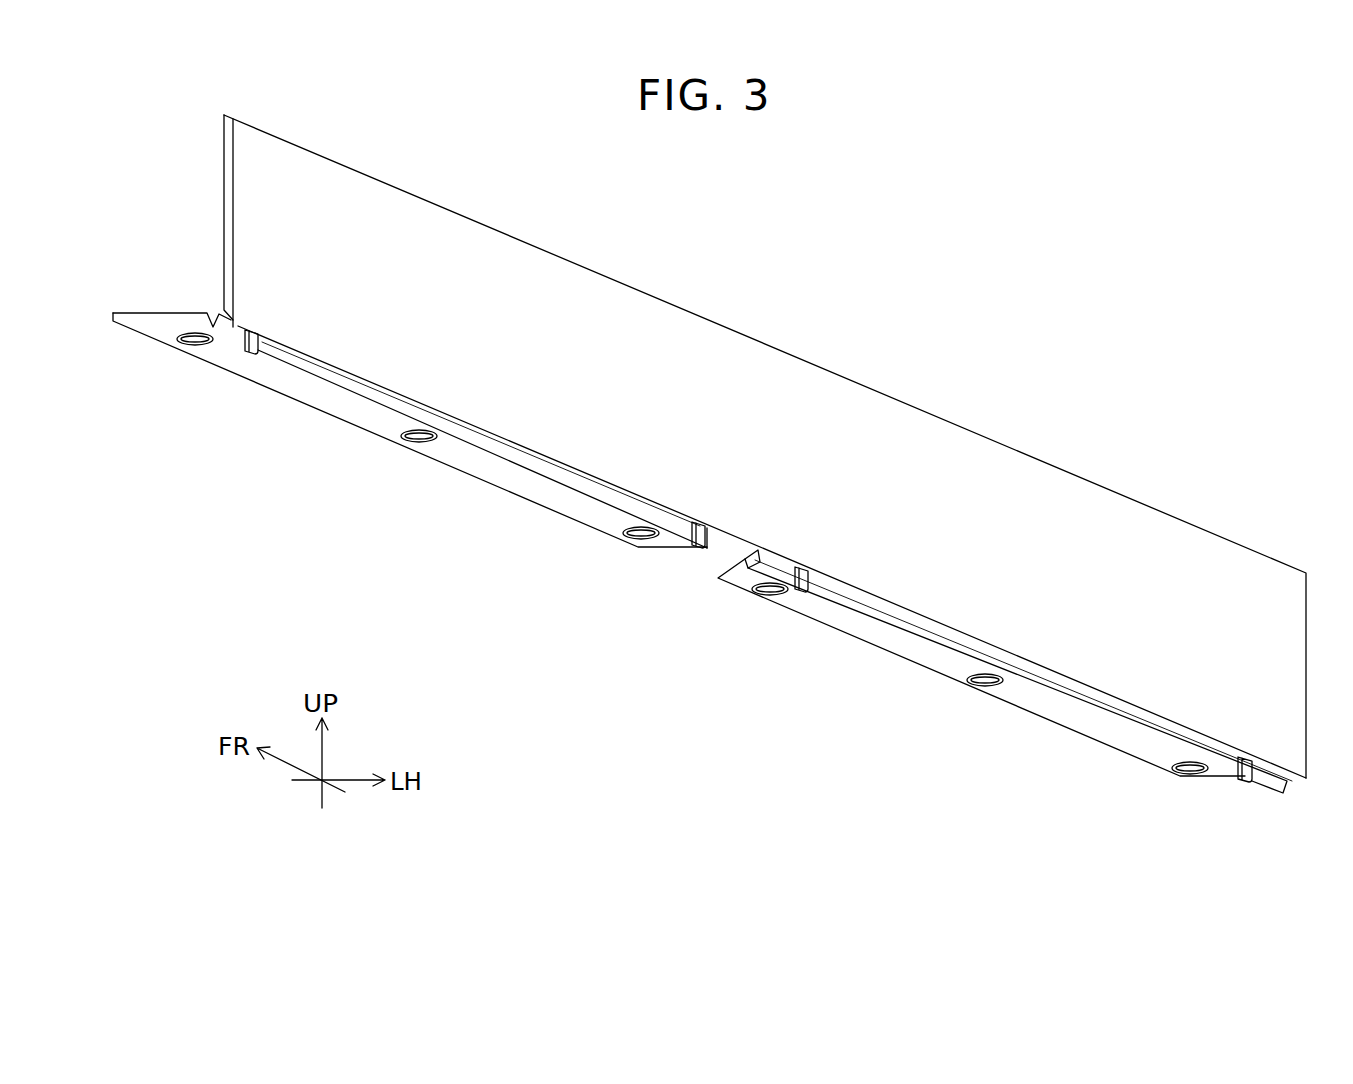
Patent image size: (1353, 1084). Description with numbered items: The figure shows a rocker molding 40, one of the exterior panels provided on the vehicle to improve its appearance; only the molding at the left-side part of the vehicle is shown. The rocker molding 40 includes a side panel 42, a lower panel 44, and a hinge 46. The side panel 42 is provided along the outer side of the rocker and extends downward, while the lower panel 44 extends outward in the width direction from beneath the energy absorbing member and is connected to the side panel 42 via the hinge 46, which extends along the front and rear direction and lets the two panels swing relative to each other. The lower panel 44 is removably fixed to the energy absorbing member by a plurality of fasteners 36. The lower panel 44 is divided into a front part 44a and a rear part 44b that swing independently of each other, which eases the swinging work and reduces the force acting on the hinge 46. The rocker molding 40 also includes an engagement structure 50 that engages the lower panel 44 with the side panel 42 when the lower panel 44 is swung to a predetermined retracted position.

The rocker molding 40 is at (1060, 215).
The side panel 42 is at (788, 372).
The lower panel 44 is at (679, 569).
The front part 44a is at (517, 480).
The rear part 44b is at (925, 648).
The hinge 46 is at (340, 390).
The fasteners 36 is at (183, 343).
The engagement structure 50 is at (243, 356).